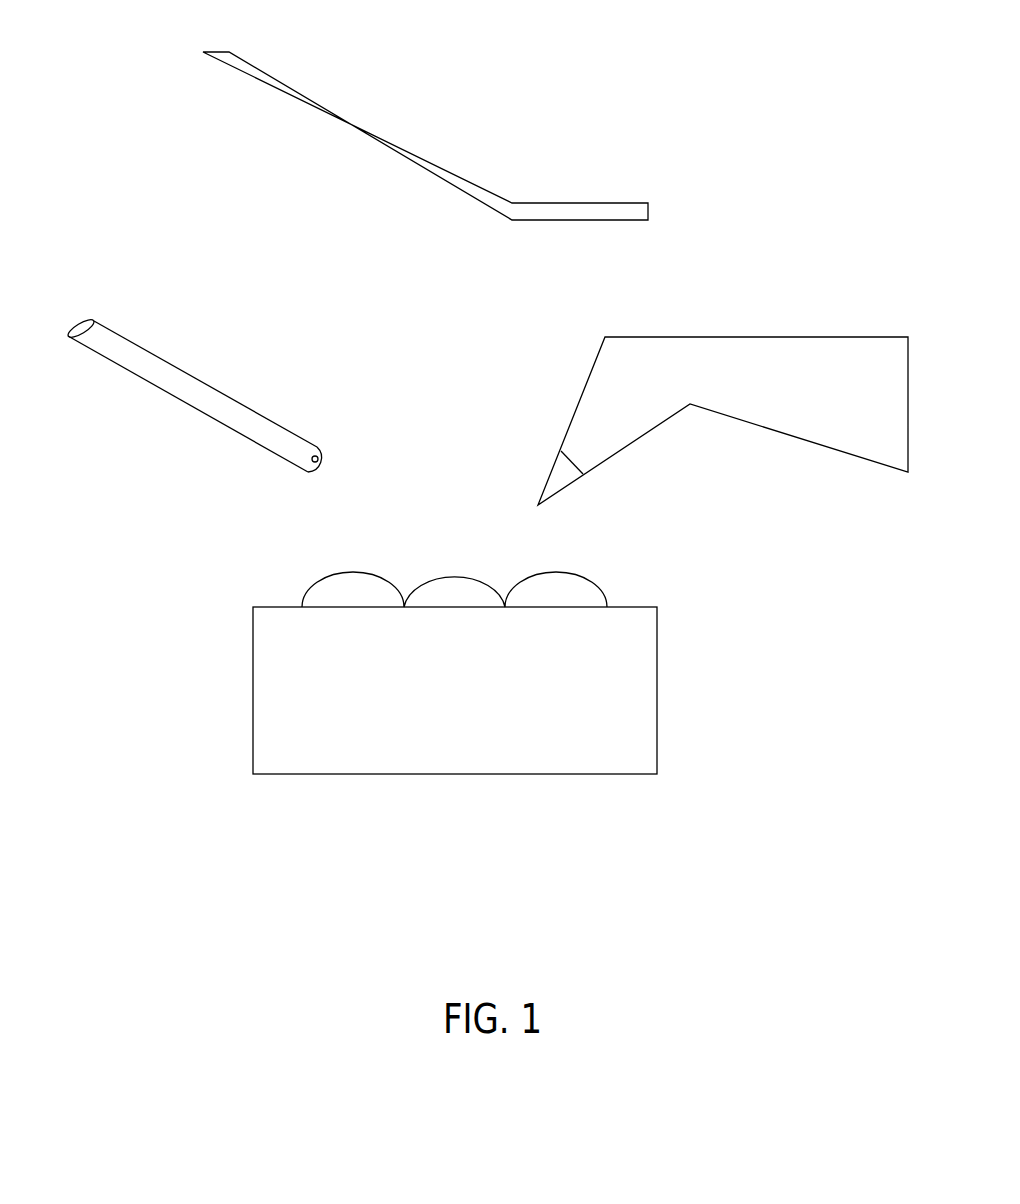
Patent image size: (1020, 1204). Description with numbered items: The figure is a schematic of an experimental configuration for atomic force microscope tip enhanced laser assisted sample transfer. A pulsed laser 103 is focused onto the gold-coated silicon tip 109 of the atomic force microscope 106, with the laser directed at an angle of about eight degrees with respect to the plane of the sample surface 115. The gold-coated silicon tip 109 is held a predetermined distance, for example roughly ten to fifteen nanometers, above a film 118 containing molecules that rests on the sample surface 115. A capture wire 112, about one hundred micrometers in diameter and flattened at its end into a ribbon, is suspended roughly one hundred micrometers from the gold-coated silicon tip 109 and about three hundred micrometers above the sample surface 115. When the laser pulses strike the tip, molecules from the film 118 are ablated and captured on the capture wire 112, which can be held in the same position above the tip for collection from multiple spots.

The pulsed laser 103 is at (200, 380).
The atomic force microscope 106 is at (863, 458).
The gold-coated silicon tip 109 is at (565, 490).
The capture wire 112 is at (423, 154).
The sample surface 115 is at (657, 692).
The film 118 is at (306, 591).